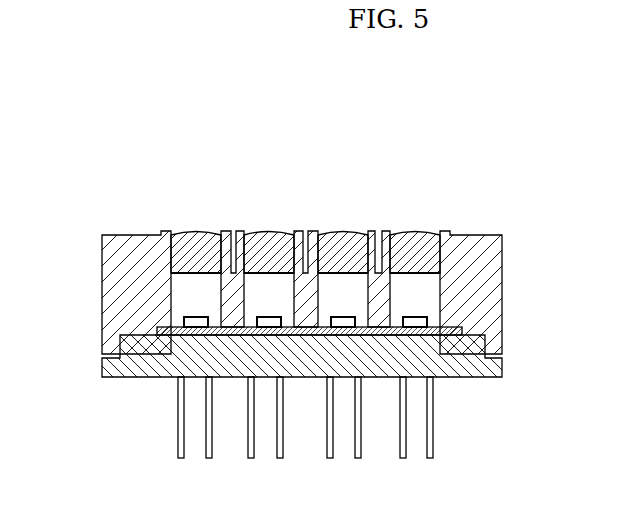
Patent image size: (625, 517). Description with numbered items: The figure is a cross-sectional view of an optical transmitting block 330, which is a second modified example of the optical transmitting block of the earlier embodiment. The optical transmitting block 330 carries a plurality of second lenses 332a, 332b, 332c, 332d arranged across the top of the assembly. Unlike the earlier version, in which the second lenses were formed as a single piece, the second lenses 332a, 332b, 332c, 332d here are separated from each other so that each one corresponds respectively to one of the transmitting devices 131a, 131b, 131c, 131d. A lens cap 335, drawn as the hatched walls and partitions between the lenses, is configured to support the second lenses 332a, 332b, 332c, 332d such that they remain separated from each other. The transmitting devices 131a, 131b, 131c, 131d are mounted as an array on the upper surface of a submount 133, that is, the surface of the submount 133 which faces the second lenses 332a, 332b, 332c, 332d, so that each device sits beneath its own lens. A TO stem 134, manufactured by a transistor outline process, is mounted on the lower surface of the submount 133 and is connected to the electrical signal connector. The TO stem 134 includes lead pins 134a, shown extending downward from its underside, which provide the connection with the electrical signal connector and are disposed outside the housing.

The optical transmitting block 330 is at (91, 170).
The lens cap 335 is at (502, 270).
The second lens 332a is at (193, 232).
The second lens 332b is at (268, 233).
The second lens 332c is at (340, 232).
The second lens 332d is at (419, 237).
The transmitting device 131a is at (184, 320).
The transmitting device 131b is at (247, 311).
The transmitting device 131c is at (172, 307).
The transmitting device 131d is at (425, 322).
The submount 133 is at (152, 337).
The TO stem 134 is at (502, 370).
The lead pins 134a is at (433, 422).